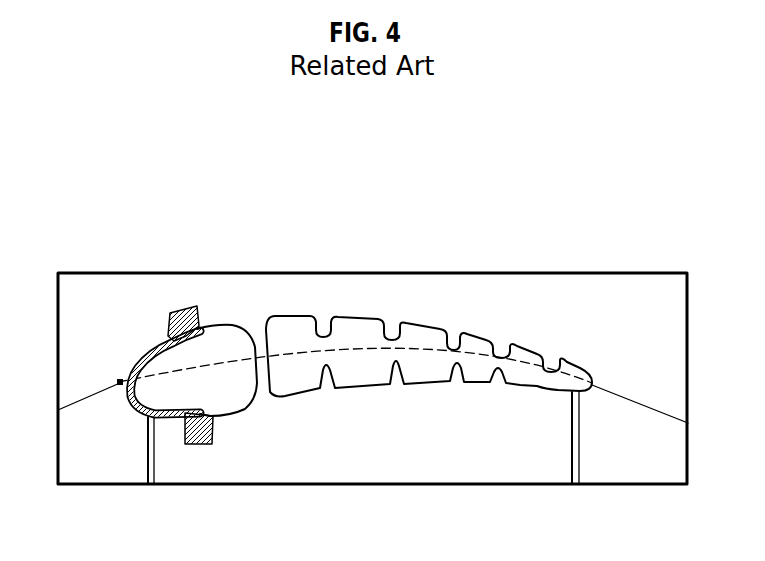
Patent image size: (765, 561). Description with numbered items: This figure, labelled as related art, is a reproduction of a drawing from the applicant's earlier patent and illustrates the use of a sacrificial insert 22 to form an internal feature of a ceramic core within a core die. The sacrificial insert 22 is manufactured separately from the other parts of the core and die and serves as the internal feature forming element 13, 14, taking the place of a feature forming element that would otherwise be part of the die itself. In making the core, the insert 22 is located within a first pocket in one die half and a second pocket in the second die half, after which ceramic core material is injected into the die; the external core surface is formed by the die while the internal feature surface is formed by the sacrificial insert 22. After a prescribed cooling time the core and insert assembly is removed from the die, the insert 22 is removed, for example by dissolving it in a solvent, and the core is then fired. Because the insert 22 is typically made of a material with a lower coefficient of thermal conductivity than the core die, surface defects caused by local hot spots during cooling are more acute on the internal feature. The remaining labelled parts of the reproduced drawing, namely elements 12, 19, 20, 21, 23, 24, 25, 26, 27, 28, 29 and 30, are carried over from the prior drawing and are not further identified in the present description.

The reference point 12 is at (117, 381).
The internal feature forming element 13 is at (200, 320).
The internal feature forming element 14 is at (213, 427).
The base rubber 19 is at (273, 467).
The tread 20 is at (316, 288).
The center line 21 is at (355, 348).
The sacrificial insert 22 is at (181, 306).
The lower clamp 23 is at (198, 445).
The bead portion 24 is at (153, 345).
The tread block 25 is at (424, 337).
The shoulder 26 is at (268, 355).
The side wall 27 is at (278, 335).
The sipes 28 is at (497, 383).
The right support 29 is at (578, 462).
The left support 30 is at (148, 466).